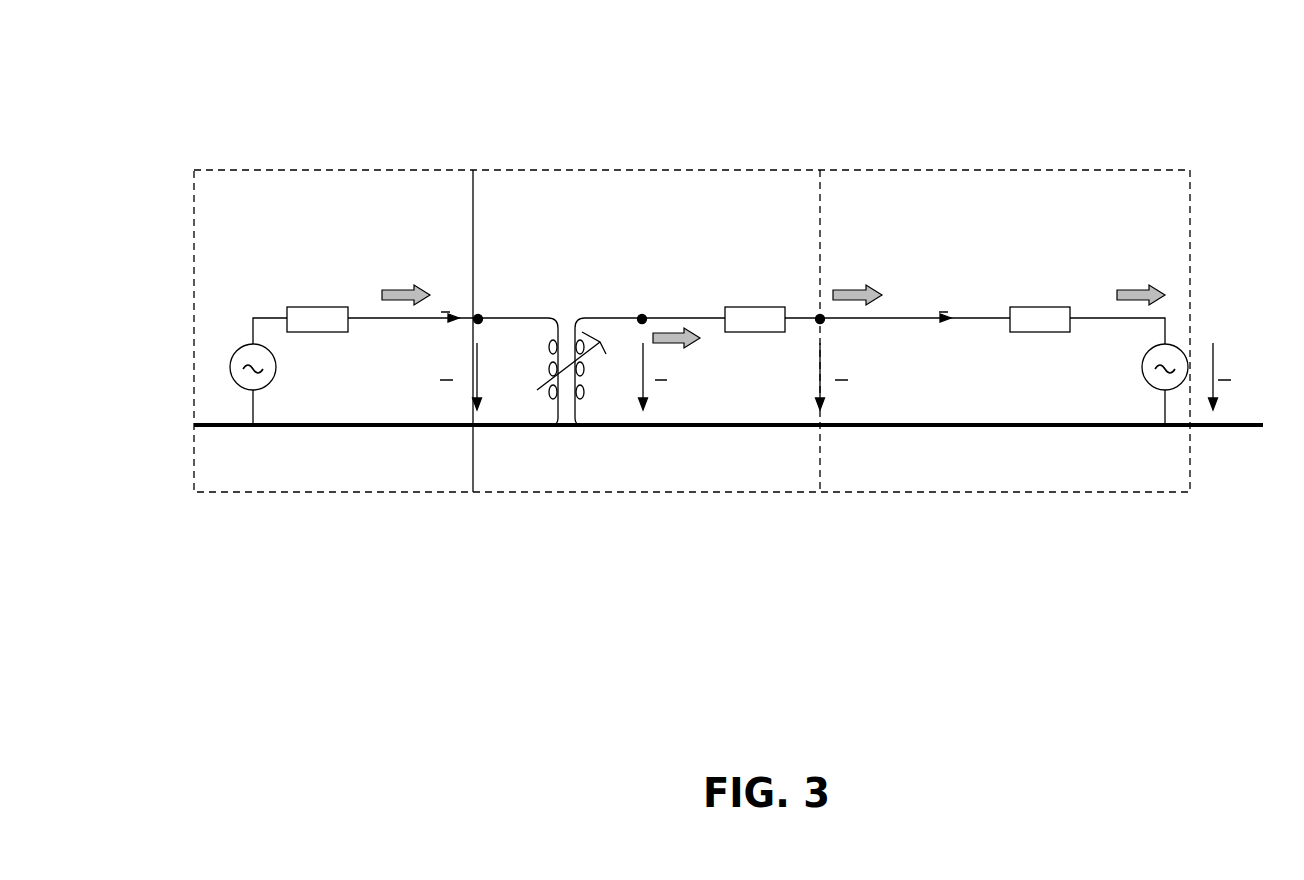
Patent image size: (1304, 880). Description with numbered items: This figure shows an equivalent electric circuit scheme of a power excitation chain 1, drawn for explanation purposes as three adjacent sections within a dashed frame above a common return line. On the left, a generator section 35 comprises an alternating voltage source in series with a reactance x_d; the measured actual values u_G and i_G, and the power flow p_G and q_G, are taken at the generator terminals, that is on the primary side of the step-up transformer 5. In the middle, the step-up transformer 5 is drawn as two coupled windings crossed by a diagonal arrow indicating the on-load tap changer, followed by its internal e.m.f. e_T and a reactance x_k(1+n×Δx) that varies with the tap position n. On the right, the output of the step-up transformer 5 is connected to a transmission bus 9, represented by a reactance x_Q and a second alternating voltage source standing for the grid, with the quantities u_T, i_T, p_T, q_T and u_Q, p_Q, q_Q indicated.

The electrical power system arrangement 1 is at (786, 120).
The generator unit 35 is at (348, 492).
The step-up transformer 5 is at (663, 492).
The transmission bus 9 is at (1033, 492).